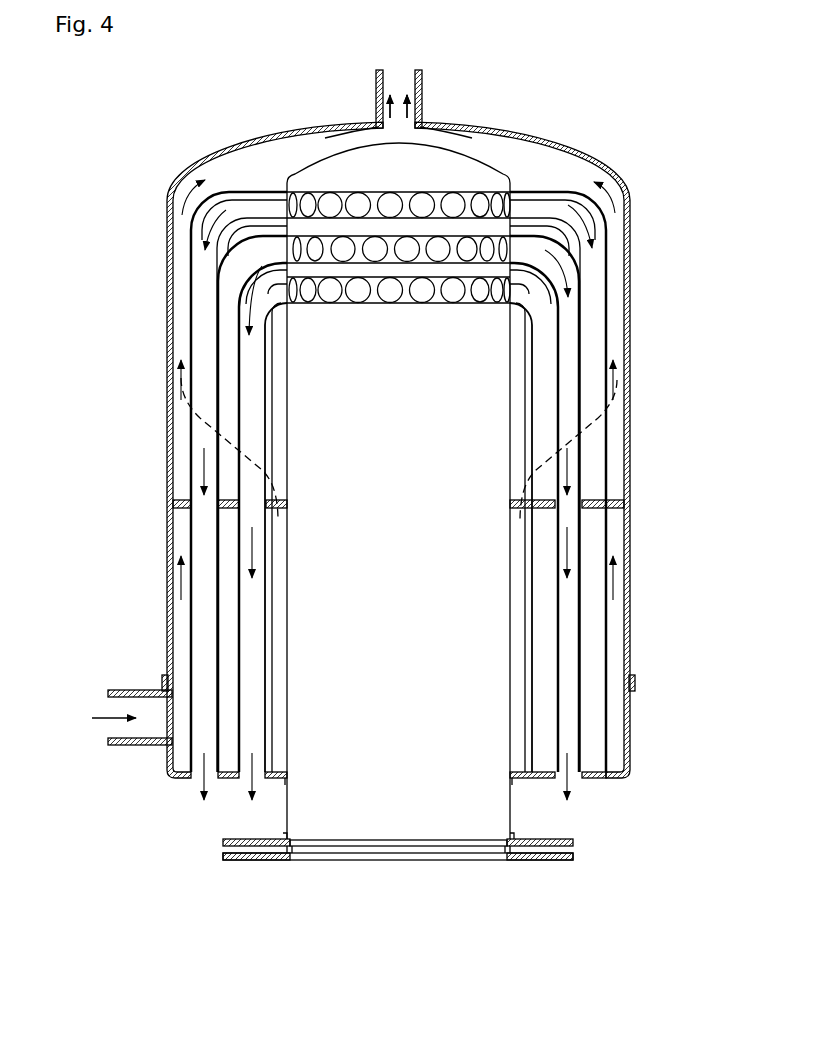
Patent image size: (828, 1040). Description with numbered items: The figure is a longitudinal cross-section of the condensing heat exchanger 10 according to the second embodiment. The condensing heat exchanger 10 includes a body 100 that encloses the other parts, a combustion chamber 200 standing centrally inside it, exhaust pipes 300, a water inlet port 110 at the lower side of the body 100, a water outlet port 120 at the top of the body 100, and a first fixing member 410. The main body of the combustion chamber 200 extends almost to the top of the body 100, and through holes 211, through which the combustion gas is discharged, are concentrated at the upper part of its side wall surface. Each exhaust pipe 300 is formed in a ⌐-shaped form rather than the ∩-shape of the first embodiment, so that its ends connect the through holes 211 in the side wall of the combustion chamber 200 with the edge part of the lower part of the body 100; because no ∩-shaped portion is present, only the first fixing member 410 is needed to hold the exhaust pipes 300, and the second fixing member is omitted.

The condensing heat exchanger 10 is at (230, 96).
The body 100 is at (628, 540).
The water inlet port 110 is at (113, 733).
The water outlet port 120 is at (424, 79).
The combustion chamber 200 is at (460, 472).
The through holes 211 is at (485, 205).
The exhaust pipes 300 is at (571, 322).
The first fixing member 410 is at (176, 505).